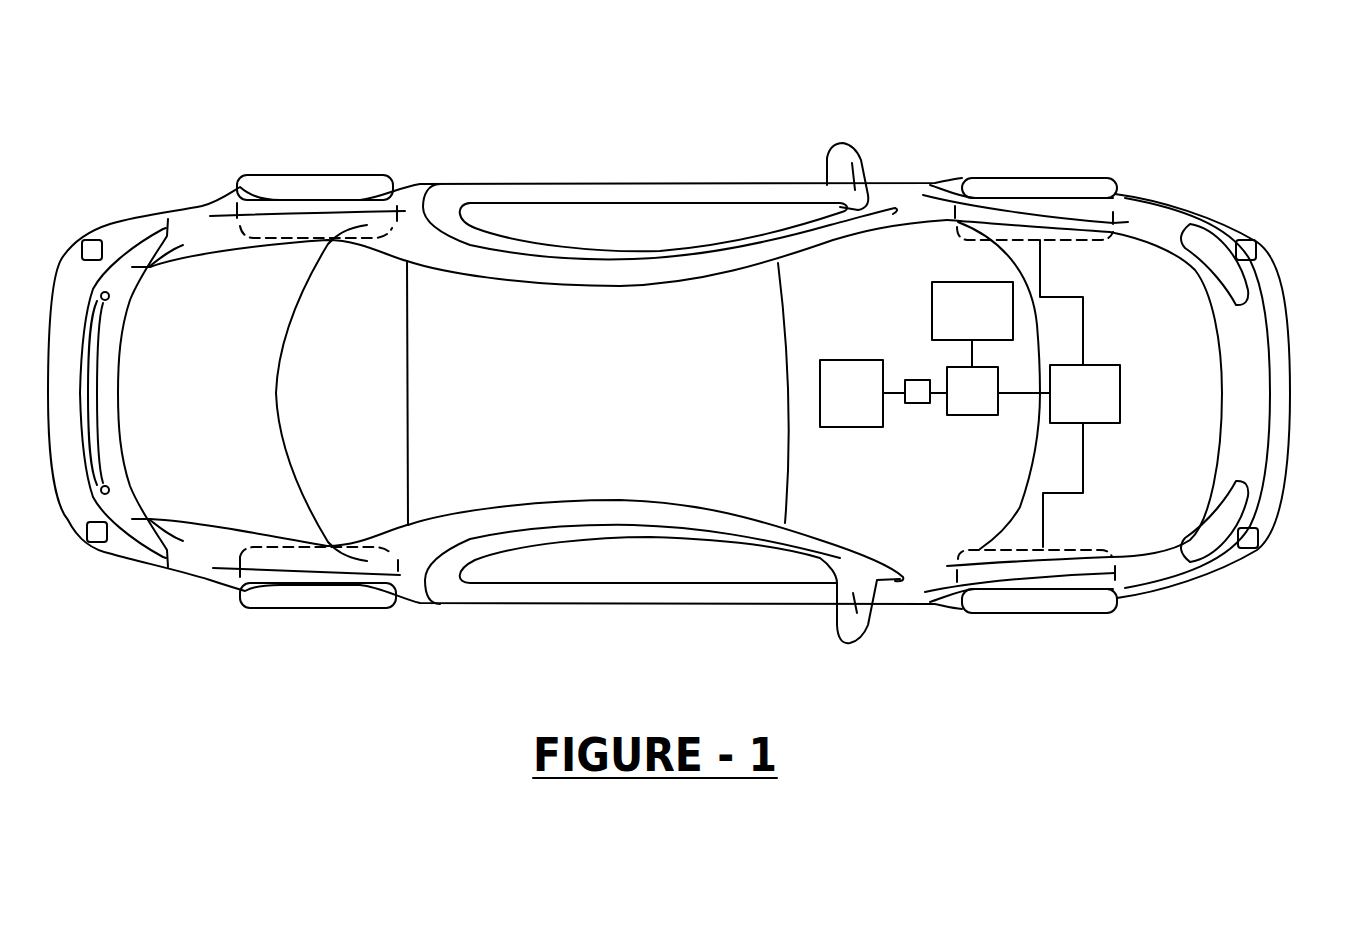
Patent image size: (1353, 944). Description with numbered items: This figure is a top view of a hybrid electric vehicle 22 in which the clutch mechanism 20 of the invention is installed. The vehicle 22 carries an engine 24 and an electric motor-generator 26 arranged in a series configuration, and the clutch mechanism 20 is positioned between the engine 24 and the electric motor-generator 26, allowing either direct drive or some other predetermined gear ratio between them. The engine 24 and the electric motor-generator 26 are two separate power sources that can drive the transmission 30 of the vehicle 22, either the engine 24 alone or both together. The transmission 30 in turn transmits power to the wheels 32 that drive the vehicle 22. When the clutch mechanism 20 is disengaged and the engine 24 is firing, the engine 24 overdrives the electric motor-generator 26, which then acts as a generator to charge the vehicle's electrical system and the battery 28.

The hybrid electric vehicle 22 is at (1097, 68).
The clutch mechanism 20 is at (917, 366).
The engine 24 is at (820, 393).
The electric motor-generator 26 is at (973, 418).
The battery 28 is at (970, 301).
The transmission 30 is at (1093, 393).
The wheels 32 is at (317, 190).